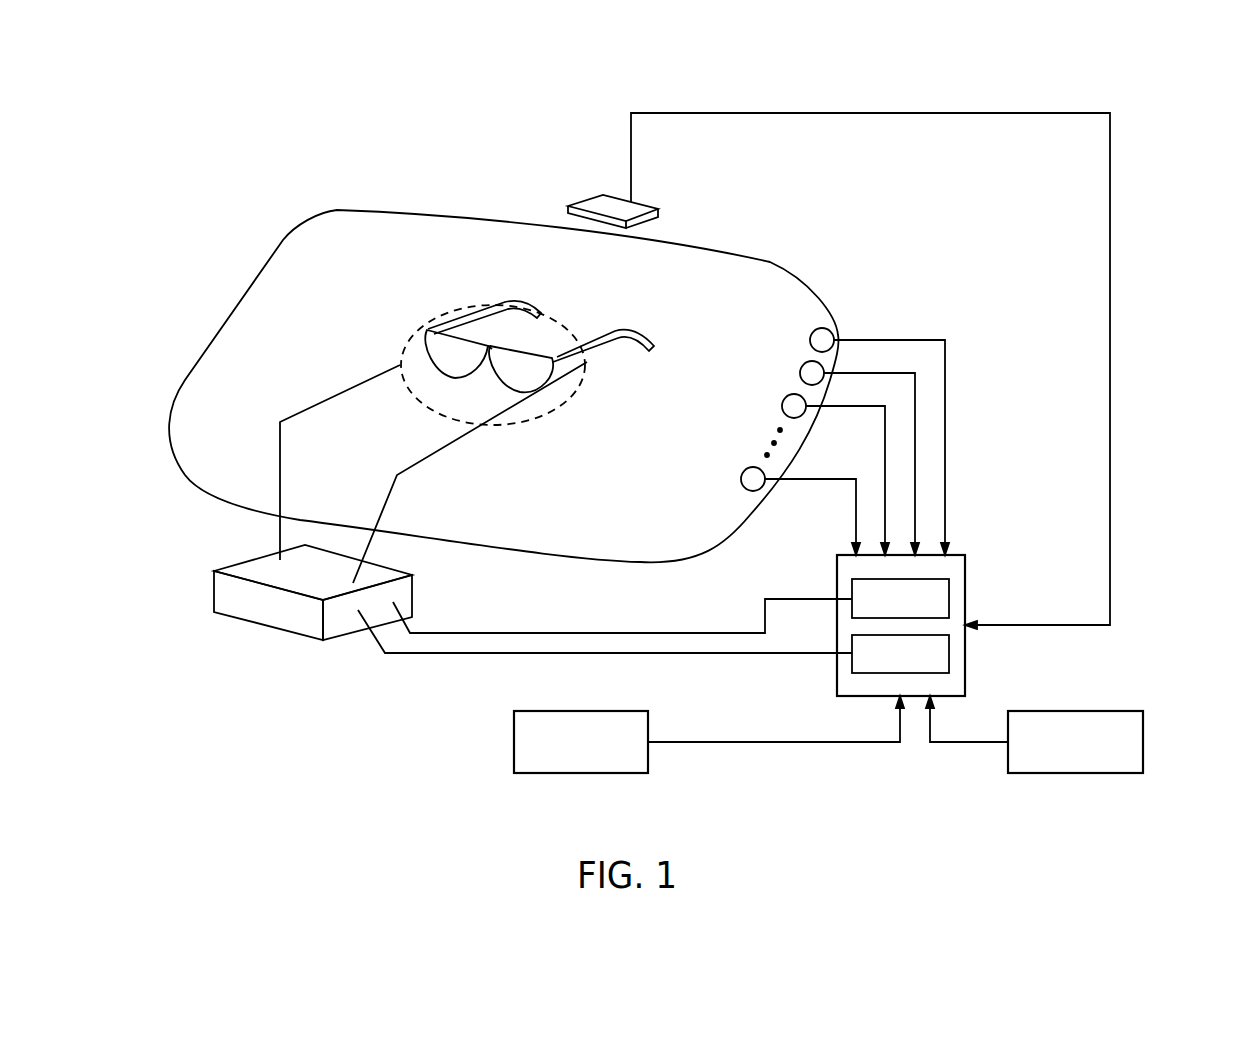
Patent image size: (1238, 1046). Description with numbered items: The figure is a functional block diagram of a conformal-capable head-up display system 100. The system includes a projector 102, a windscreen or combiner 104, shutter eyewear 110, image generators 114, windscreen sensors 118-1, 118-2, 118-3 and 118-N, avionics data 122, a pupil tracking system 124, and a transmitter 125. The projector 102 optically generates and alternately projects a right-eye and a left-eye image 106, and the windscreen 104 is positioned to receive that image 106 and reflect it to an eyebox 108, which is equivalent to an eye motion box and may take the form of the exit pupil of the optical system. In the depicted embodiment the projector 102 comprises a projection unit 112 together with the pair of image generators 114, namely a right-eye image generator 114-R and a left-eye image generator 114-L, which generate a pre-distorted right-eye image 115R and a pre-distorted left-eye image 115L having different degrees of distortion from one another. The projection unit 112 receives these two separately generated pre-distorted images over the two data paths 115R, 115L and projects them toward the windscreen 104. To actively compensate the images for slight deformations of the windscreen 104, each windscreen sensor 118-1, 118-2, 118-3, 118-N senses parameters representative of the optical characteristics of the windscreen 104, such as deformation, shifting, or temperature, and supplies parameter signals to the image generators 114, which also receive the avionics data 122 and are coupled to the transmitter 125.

The conformal-capable head-up display system 100 is at (152, 143).
The projector 102 is at (458, 713).
The windscreen 104 is at (229, 317).
The right-eye and left-eye image 106 is at (317, 403).
The eyebox 108 is at (543, 417).
The shutter eyewear 110 is at (662, 307).
The projection unit 112 is at (214, 590).
The image generators 114 is at (938, 599).
The right-eye image generator 114-R is at (950, 598).
The left-eye image generator 114-L is at (950, 653).
The pre-distorted right-eye image 115R is at (510, 632).
The pre-distorted left-eye image 115L is at (422, 657).
The windscreen sensor 118-1 is at (827, 328).
The windscreen sensor 118-2 is at (800, 373).
The windscreen sensor 118-3 is at (782, 407).
The windscreen sensor 118-N is at (741, 477).
The avionics data 122 is at (650, 720).
The pupil tracking system 124 is at (647, 205).
The transmitter 125 is at (1143, 720).